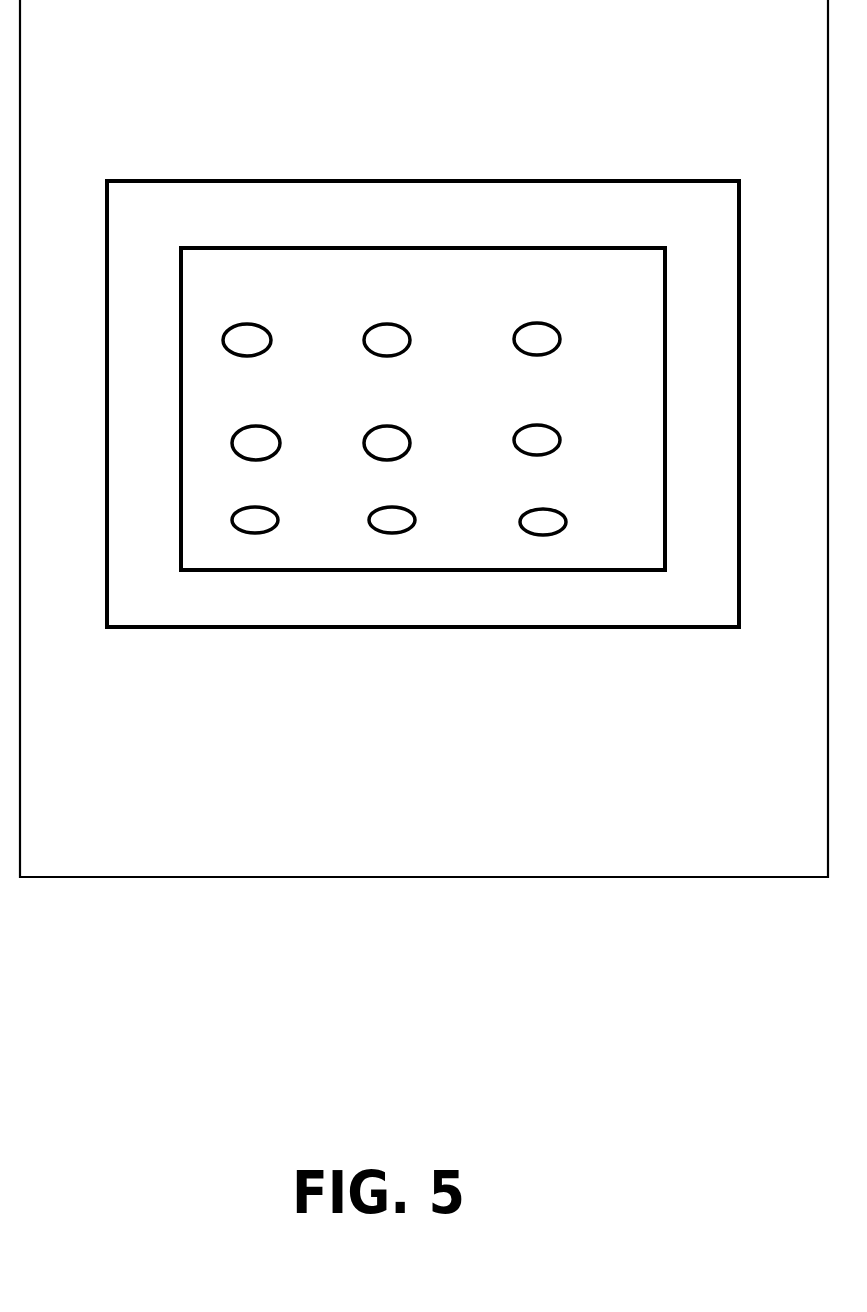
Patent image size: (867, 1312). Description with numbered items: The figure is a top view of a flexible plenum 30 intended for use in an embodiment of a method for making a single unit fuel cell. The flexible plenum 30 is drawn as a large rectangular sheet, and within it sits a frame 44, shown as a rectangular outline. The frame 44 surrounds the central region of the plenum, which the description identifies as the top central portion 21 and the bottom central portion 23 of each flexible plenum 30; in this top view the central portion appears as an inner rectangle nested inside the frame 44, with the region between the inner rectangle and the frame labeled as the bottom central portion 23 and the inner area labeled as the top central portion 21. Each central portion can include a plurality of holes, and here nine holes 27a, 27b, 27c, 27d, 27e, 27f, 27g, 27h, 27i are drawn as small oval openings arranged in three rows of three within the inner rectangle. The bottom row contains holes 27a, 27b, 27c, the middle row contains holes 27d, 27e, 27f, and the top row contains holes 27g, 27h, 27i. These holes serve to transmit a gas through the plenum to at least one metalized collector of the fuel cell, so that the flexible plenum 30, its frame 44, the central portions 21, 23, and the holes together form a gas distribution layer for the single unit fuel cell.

The flexible plenum 30 is at (193, 877).
The frame 44 is at (407, 346).
The bottom central portion 23 is at (480, 215).
The top central portion 21 is at (347, 352).
The hole 27a is at (252, 517).
The hole 27b is at (393, 520).
The hole 27c is at (538, 527).
The hole 27d is at (248, 443).
The hole 27e is at (382, 447).
The hole 27f is at (530, 437).
The hole 27g is at (247, 340).
The hole 27h is at (382, 338).
The hole 27i is at (530, 333).